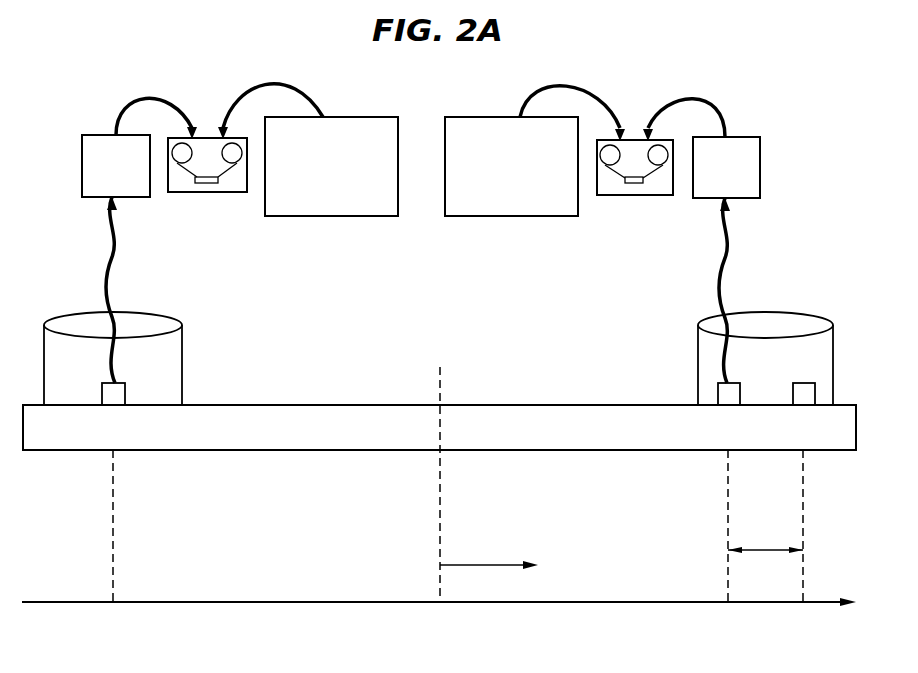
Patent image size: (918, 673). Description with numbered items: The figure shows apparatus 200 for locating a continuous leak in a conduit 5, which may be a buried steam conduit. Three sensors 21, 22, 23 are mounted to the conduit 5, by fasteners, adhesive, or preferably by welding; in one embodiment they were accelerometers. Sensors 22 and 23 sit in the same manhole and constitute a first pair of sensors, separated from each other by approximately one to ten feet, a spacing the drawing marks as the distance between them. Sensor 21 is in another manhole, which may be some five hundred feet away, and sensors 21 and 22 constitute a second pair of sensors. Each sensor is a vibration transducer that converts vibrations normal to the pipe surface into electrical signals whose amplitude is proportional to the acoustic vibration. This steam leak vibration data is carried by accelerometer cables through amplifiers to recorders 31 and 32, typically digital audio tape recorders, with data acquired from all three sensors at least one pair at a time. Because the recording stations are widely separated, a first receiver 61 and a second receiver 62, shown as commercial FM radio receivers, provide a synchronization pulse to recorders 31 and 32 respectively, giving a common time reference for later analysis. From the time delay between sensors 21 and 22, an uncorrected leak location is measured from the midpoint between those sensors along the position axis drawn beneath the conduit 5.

The apparatus 200 is at (97, 65).
The recorder 31 is at (210, 137).
The recorder 32 is at (633, 139).
The first receiver 61 is at (345, 216).
The second receiver 62 is at (523, 216).
The conduit 5 is at (320, 408).
The sensor 21 is at (117, 399).
The sensor 22 is at (729, 400).
The sensor 23 is at (805, 393).